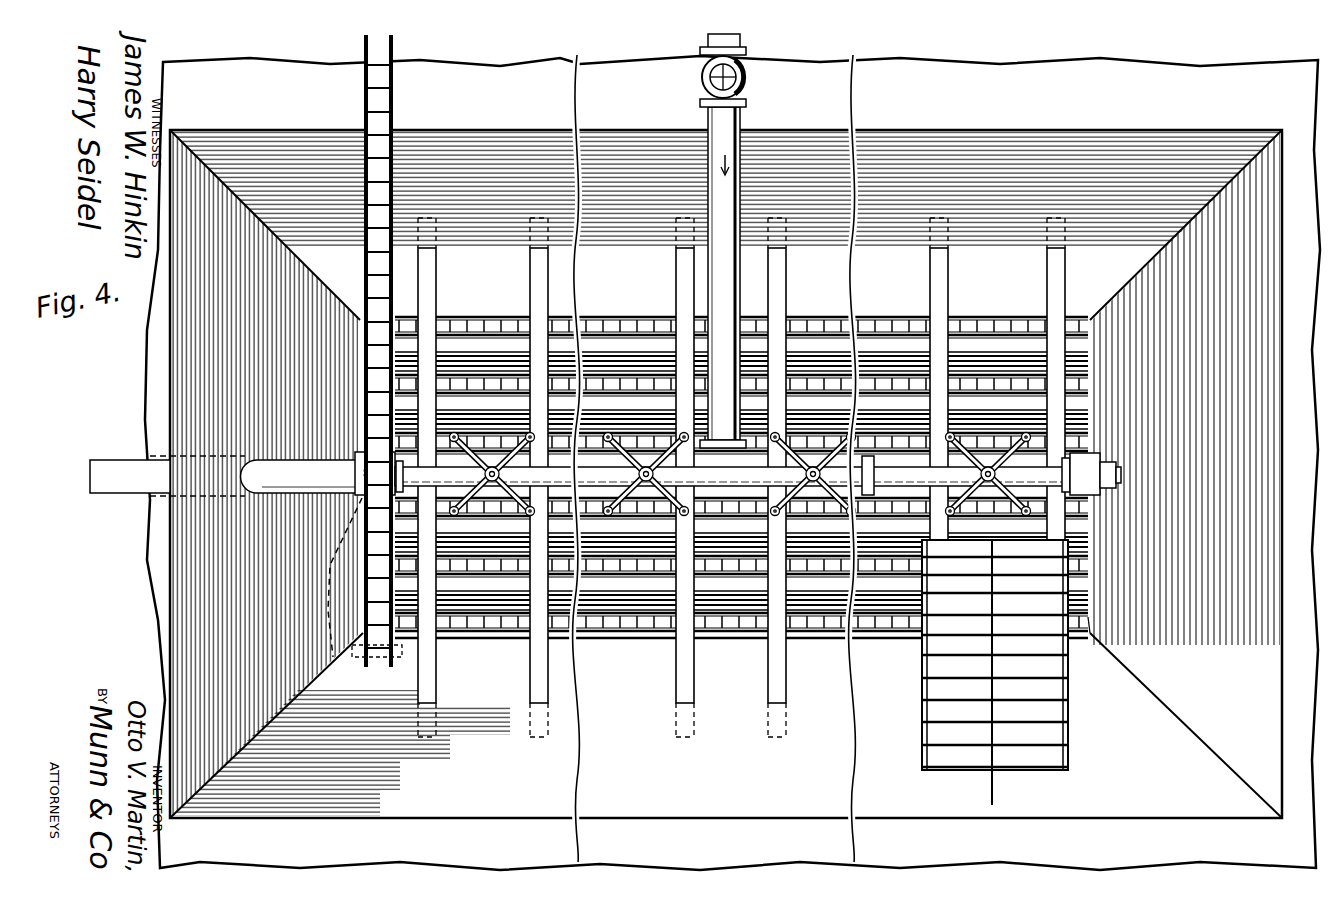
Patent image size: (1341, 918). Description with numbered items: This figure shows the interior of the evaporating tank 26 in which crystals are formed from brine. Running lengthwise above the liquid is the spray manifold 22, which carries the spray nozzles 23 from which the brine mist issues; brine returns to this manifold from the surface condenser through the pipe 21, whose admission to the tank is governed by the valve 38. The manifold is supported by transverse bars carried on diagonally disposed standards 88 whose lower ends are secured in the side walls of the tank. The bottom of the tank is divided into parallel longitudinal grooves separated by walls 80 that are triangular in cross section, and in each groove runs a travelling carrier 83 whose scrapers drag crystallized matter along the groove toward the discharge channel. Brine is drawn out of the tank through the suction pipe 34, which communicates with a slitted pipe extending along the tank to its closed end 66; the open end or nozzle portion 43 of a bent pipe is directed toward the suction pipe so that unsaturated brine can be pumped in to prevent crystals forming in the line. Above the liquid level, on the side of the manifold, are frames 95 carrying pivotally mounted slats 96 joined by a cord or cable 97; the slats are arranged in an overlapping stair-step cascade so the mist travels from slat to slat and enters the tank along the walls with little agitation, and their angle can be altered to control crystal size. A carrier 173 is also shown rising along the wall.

The ladder 173 is at (393, 351).
The valve 38 is at (700, 78).
The pipe 21 is at (743, 129).
The travelling carriers 83 is at (630, 311).
The walls 80 is at (881, 348).
The standards 88 is at (952, 304).
The pipe 34 is at (258, 475).
The manifold 22 is at (732, 475).
The closed end 66 is at (1103, 459).
The nozzles 23 is at (527, 514).
The open end or nozzle portion 43 is at (331, 658).
The tank 26 is at (1260, 660).
The frames 95 is at (1070, 716).
The slats 96 is at (947, 688).
The cord or cable 97 is at (990, 782).